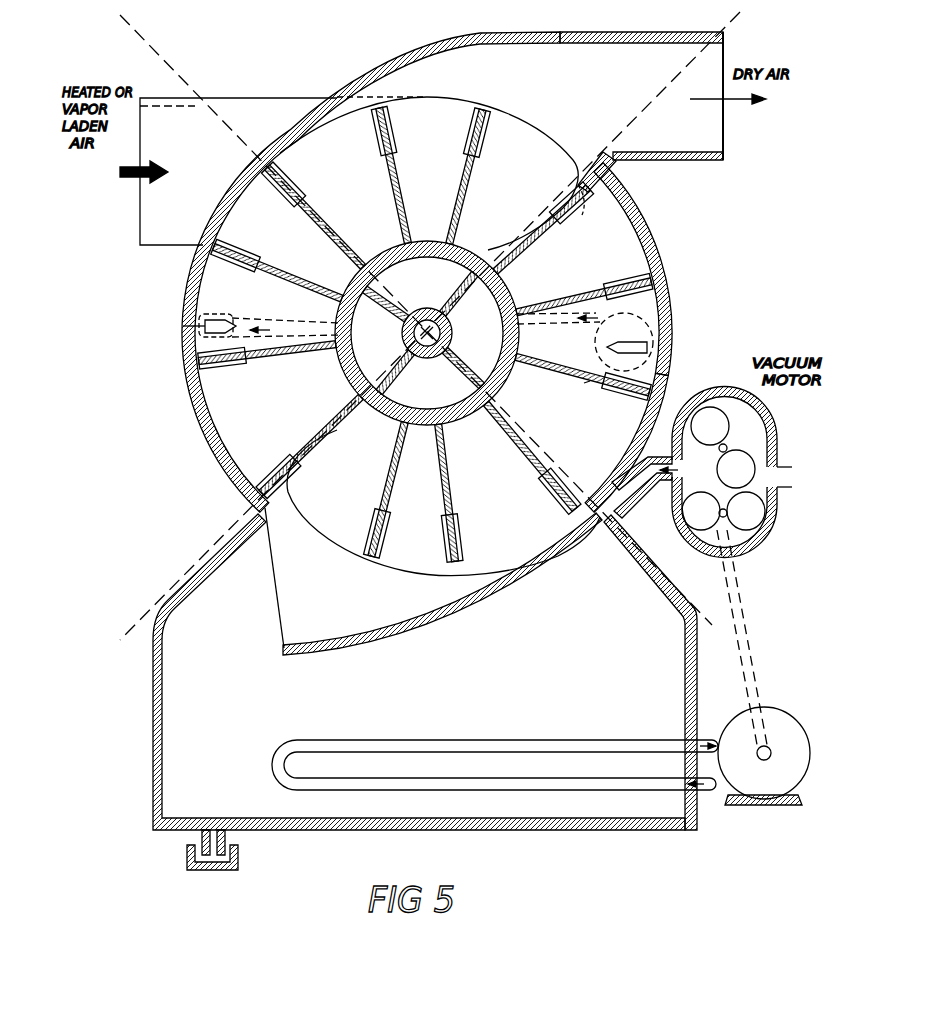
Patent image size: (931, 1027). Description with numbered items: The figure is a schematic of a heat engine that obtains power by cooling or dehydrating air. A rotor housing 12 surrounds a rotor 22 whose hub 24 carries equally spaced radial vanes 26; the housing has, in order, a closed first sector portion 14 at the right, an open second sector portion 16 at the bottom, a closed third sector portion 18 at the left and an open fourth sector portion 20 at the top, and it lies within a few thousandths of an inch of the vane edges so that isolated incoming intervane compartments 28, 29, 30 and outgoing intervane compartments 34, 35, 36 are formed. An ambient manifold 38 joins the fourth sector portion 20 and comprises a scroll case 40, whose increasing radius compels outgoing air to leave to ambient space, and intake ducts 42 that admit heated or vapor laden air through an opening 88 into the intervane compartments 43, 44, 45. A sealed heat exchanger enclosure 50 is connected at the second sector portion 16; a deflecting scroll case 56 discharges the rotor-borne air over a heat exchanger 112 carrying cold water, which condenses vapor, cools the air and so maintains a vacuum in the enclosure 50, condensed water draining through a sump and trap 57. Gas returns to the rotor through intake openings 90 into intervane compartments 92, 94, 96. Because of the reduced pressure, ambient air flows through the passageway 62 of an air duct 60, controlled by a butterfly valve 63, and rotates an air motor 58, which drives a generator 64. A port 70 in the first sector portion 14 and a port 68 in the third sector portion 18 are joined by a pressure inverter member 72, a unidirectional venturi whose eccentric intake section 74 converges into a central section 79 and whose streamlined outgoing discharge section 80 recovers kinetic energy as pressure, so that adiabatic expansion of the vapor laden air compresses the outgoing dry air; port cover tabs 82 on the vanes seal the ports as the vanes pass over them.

The rotor housing 12 is at (683, 245).
The closed first sector portion 14 is at (670, 358).
The open second sector portion 16 is at (278, 512).
The closed third sector portion 18 is at (185, 404).
The open fourth sector portion 20 is at (610, 158).
The rotor 22 is at (540, 302).
The hub 24 is at (493, 390).
The vanes 26 is at (584, 383).
The incoming intervane compartment 28 is at (582, 399).
The incoming intervane compartment 29 is at (584, 313).
The incoming intervane compartment 30 is at (542, 230).
The outgoing intervane compartment 34 is at (278, 272).
The outgoing intervane compartment 35 is at (267, 352).
The outgoing intervane compartment 36 is at (311, 444).
The ambient manifold 38 is at (362, 96).
The scroll case 40 is at (672, 34).
The intake ducts 42 is at (250, 97).
The intervane compartment 43 is at (316, 217).
The intervane compartment 44 is at (404, 175).
The intervane compartment 45 is at (479, 177).
The sealed heat exchanger enclosure 50 is at (156, 713).
The deflecting scroll case 56 is at (370, 648).
The sump and trap 57 is at (190, 866).
The air motor 58 is at (760, 405).
The air duct 60 is at (630, 508).
The passageway 62 is at (617, 538).
The butterfly valve 63 is at (625, 522).
The generator 64 is at (812, 818).
The port 68 is at (181, 327).
The port 70 is at (672, 340).
The pressure inverter member 72 is at (280, 322).
The eccentric intake section 74 is at (605, 362).
The central section 79 is at (355, 330).
The outgoing discharge section 80 is at (226, 320).
The port cover tabs 82 is at (492, 150).
The opening 88 is at (518, 108).
The intake openings 90 is at (410, 575).
The intervane compartment 92 is at (375, 489).
The intervane compartment 94 is at (435, 492).
The intervane compartment 96 is at (530, 456).
The heat exchanger 112 is at (468, 742).